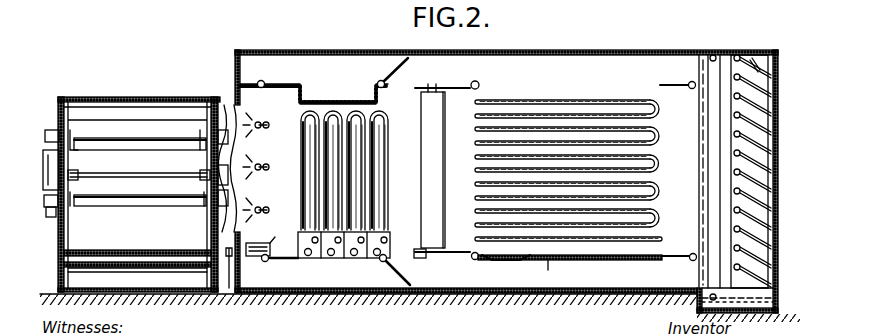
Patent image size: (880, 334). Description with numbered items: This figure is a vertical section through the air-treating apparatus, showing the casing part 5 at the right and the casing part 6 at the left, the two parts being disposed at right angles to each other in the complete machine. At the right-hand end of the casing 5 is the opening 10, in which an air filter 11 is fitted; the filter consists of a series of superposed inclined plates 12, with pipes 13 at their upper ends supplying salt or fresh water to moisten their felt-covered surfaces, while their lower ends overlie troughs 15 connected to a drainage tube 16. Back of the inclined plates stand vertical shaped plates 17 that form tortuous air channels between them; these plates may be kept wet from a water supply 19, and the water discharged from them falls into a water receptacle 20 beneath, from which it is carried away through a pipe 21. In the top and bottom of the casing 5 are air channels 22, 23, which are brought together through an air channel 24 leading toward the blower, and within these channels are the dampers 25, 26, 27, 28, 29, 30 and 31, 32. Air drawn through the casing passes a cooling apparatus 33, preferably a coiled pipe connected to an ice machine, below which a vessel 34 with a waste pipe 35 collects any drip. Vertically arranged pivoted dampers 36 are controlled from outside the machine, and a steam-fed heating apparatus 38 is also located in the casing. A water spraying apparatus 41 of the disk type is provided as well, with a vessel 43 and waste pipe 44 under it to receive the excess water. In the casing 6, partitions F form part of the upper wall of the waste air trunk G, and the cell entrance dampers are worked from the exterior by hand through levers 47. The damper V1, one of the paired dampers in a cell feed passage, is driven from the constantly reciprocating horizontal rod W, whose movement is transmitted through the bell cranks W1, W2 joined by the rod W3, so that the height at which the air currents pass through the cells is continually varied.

The casing part 5 is at (612, 50).
The casing part 6 is at (60, 240).
The opening 10 is at (790, 155).
The air filter 11 is at (745, 148).
The inclined plates 12 is at (752, 75).
The pipes 13 is at (735, 55).
The troughs 15 is at (775, 70).
The drainage tube 16 is at (775, 312).
The shaped plates 17 is at (712, 195).
The water supply 19 is at (712, 55).
The water receptacle 20 is at (700, 308).
The pipe 21 is at (713, 280).
The air channel 22 is at (580, 152).
The air channel 23 is at (570, 272).
The air channel 24 is at (262, 167).
The damper 25 is at (680, 83).
The damper 26 is at (677, 258).
The damper 27 is at (472, 86).
The damper 28 is at (470, 258).
The damper 29 is at (380, 72).
The damper 30 is at (390, 266).
The damper 31 is at (292, 81).
The damper 32 is at (284, 259).
The cooling apparatus 33 is at (640, 150).
The vessel 34 is at (548, 272).
The waste pipe 35 is at (510, 258).
The pivoted dampers 36 is at (432, 150).
The heating apparatus 38 is at (372, 200).
The water spraying apparatus 41 is at (262, 172).
The vessel 43 is at (250, 258).
The waste pipe 44 is at (229, 270).
The levers 47 is at (205, 160).
The damper V1 is at (149, 137).
The bell crank W2 is at (56, 140).
The rod W3 is at (50, 178).
The horizontal rod W is at (46, 212).
The bell crank W1 is at (33, 223).
The partitions F is at (85, 270).
The waste air trunk G is at (163, 292).